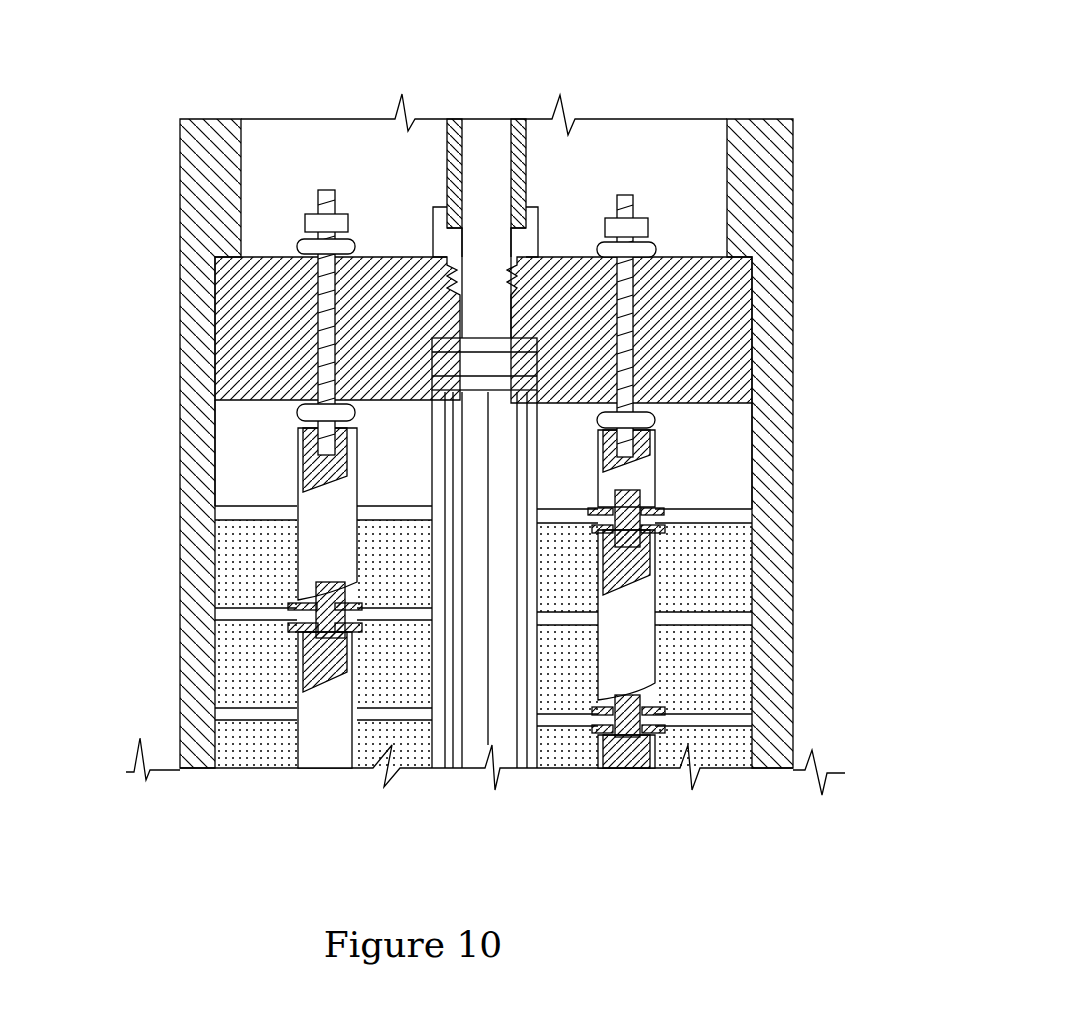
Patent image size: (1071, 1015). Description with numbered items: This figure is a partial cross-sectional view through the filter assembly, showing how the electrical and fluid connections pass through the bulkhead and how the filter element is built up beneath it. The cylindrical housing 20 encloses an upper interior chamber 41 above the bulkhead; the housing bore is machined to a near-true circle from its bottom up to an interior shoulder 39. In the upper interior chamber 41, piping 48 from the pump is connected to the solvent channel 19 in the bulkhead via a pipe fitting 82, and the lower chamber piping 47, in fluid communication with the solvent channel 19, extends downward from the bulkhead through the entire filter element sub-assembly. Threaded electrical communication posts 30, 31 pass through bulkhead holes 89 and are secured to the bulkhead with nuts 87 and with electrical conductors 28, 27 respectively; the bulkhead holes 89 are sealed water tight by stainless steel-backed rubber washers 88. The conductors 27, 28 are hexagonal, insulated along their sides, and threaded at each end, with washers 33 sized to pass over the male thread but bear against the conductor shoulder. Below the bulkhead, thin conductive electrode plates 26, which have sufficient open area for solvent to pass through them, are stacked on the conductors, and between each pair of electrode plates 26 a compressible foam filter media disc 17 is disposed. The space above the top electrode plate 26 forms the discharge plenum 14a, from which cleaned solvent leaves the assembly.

The discharge plenum 14a is at (245, 455).
The filter media disc 17 is at (255, 553).
The solvent channel 19 is at (495, 319).
The housing 20 is at (765, 182).
The electrode plate 26 is at (703, 612).
The electrical conductor 27 is at (325, 505).
The electrical conductor 28 is at (620, 472).
The threaded electrical communication post 30 is at (628, 195).
The threaded electrical communication post 31 is at (322, 190).
The washer 33 is at (300, 603).
The interior shoulder 39 is at (753, 300).
The upper interior chamber 41 is at (368, 168).
The lower chamber piping 47 is at (468, 712).
The piping 48 is at (487, 140).
The pipe fitting 82 is at (433, 215).
The nut 87 is at (308, 223).
The stainless steel-backed rubber washer 88 is at (298, 244).
The bulkhead hole 89 is at (310, 312).